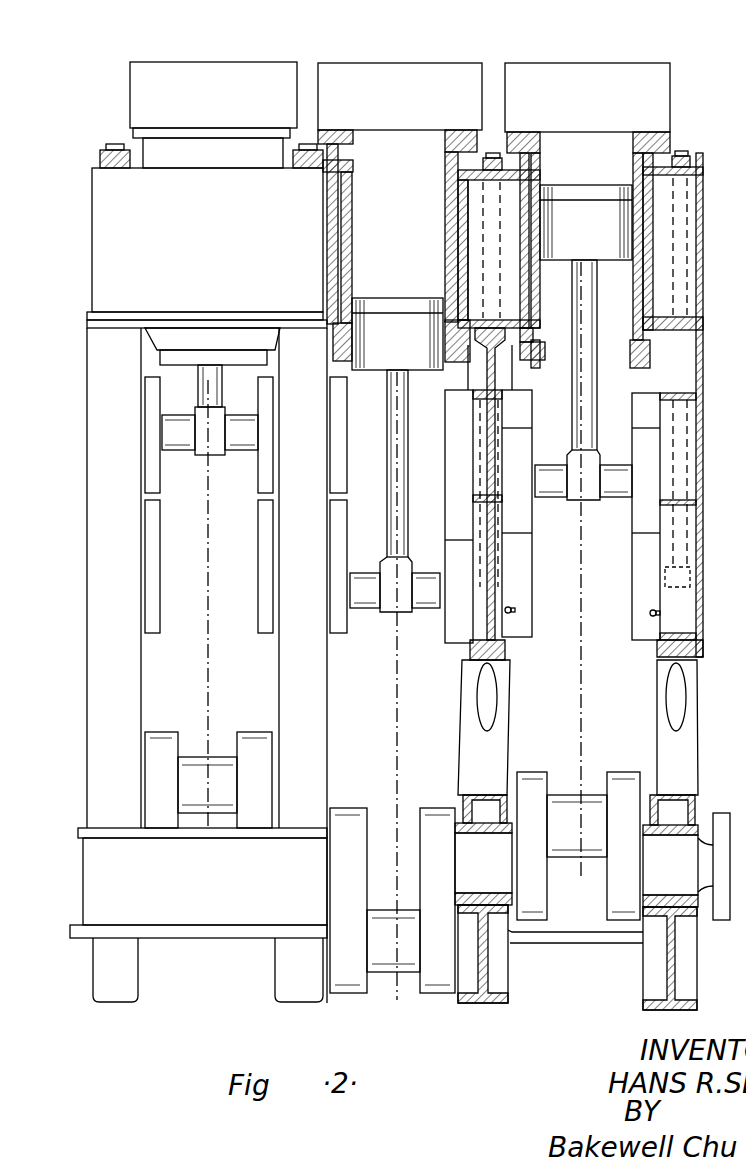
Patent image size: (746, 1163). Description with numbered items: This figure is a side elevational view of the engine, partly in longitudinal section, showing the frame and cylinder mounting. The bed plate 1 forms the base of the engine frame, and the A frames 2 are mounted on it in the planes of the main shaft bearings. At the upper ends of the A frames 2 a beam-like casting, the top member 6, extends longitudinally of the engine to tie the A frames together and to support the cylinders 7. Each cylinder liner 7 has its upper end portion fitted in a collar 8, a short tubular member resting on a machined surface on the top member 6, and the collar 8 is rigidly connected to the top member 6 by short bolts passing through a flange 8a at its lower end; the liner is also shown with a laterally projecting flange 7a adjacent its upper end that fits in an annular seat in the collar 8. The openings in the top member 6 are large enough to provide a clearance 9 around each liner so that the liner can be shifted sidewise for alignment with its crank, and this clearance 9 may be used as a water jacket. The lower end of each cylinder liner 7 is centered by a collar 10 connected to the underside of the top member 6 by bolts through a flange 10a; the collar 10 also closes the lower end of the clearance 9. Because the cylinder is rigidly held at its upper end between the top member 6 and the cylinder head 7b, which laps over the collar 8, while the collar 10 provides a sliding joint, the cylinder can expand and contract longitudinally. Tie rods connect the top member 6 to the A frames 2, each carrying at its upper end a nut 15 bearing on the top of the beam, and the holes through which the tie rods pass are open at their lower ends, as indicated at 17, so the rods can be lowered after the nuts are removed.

The bed plate 1 is at (247, 903).
The A frames 2 is at (118, 697).
The top member of the frame 6 is at (130, 240).
The cylinder liner 7 is at (343, 250).
The cylinder flange 7a is at (343, 133).
The cylinder head 7b is at (410, 87).
The collar 8 is at (340, 163).
The flange 8a is at (465, 178).
The clearance 9 is at (333, 250).
The centering collar 10 is at (332, 350).
The flange 10a is at (480, 338).
The nut 15 is at (112, 148).
The open lower end of tie rod hole 17 is at (487, 702).